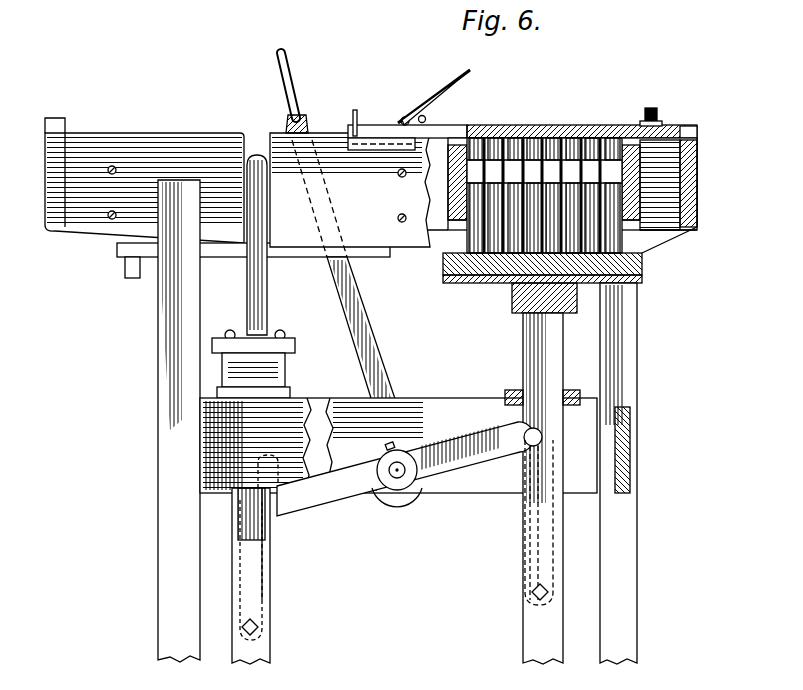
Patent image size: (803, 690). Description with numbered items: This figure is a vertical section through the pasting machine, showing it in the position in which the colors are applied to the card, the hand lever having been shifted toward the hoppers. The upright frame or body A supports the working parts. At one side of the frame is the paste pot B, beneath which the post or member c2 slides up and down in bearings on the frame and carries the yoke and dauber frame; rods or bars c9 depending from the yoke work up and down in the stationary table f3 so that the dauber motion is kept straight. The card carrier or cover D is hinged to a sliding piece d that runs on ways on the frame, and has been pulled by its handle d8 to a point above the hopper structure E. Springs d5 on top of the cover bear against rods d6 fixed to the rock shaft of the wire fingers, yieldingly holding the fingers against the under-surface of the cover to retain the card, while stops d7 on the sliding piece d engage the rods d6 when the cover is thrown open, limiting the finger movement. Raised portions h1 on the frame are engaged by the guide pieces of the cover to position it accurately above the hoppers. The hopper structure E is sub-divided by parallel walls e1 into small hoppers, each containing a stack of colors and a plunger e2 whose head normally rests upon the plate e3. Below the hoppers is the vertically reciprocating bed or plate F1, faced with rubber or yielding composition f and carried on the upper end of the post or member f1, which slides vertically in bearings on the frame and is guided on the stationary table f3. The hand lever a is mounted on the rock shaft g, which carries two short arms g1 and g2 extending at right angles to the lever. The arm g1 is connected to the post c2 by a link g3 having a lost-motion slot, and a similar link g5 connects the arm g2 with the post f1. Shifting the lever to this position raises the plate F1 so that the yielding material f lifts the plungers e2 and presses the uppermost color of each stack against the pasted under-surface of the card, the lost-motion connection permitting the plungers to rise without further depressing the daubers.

The upright frame or body A is at (166, 342).
The paste pot B is at (382, 250).
The post or member c2 is at (272, 372).
The guide rods or bars c9 is at (240, 530).
The hand lever a is at (292, 80).
The sliding piece d is at (369, 135).
The springs d5 is at (458, 82).
The rods d6 is at (428, 116).
The stops d7 is at (354, 114).
The handle d8 is at (662, 118).
The card carrier or cover D is at (540, 127).
The hopper structure E is at (562, 195).
The parallel walls e1 is at (583, 138).
The plunger e2 is at (478, 255).
The plate e3 is at (642, 242).
The vertically reciprocating bed or plate F1 is at (644, 283).
The rubber or yielding composition f is at (510, 262).
The post or member f1 is at (548, 348).
The stationary table f3 is at (568, 402).
The rock shaft g is at (397, 478).
The short arm g1 is at (328, 498).
The short arm g2 is at (473, 470).
The link g3 is at (275, 525).
The link g5 is at (523, 530).
The raised portions h1 is at (704, 138).